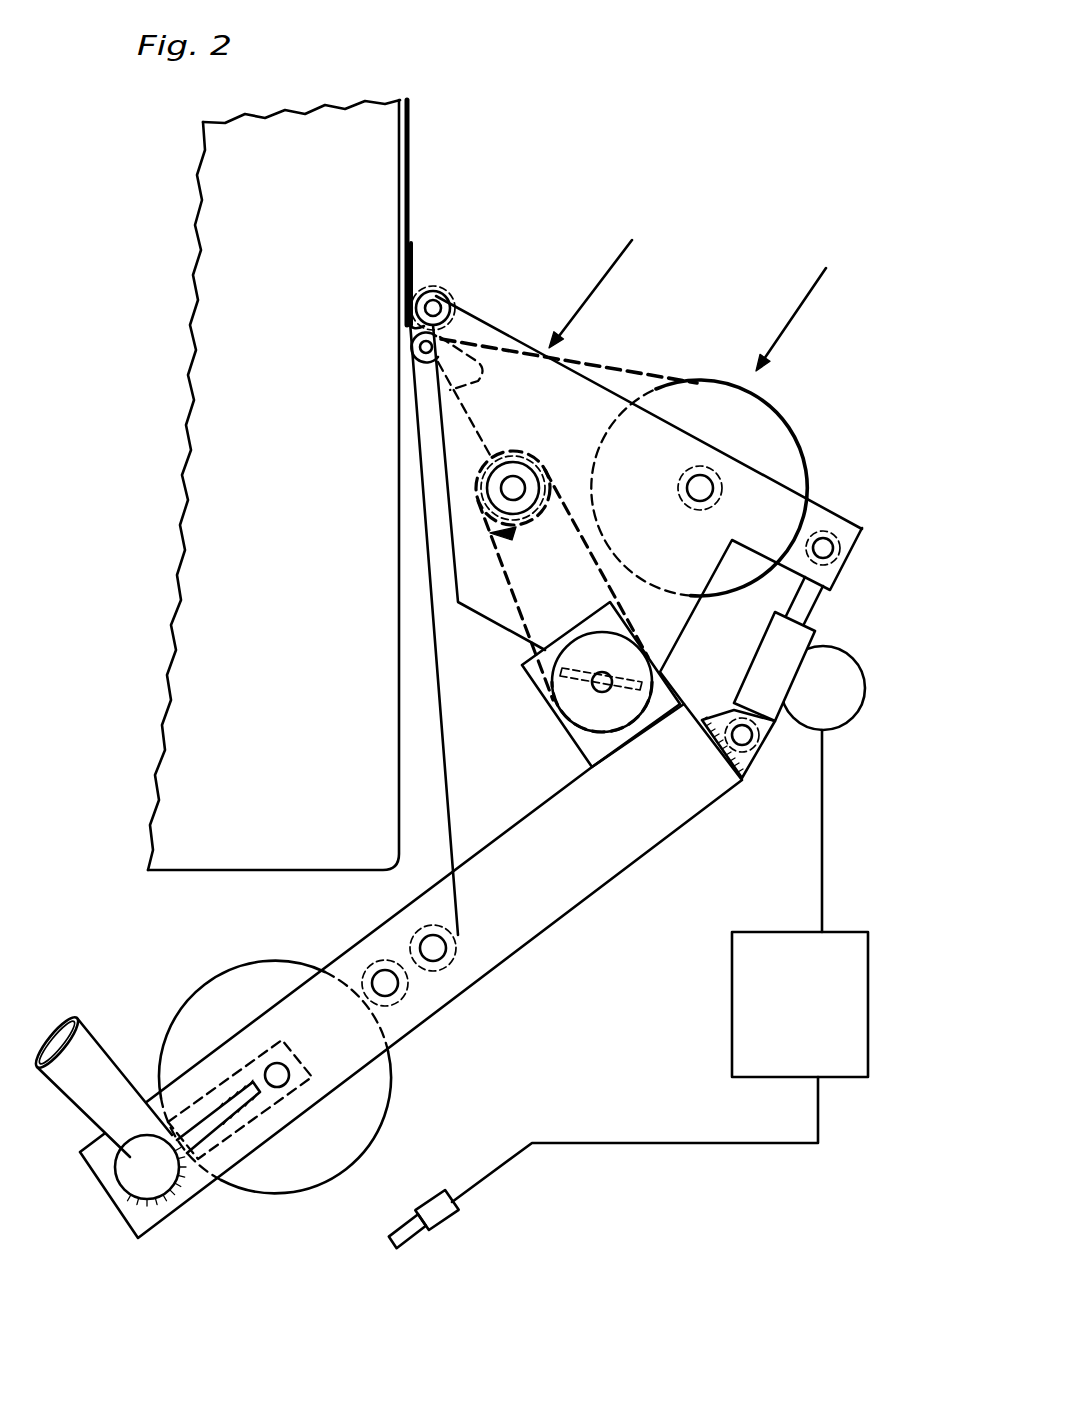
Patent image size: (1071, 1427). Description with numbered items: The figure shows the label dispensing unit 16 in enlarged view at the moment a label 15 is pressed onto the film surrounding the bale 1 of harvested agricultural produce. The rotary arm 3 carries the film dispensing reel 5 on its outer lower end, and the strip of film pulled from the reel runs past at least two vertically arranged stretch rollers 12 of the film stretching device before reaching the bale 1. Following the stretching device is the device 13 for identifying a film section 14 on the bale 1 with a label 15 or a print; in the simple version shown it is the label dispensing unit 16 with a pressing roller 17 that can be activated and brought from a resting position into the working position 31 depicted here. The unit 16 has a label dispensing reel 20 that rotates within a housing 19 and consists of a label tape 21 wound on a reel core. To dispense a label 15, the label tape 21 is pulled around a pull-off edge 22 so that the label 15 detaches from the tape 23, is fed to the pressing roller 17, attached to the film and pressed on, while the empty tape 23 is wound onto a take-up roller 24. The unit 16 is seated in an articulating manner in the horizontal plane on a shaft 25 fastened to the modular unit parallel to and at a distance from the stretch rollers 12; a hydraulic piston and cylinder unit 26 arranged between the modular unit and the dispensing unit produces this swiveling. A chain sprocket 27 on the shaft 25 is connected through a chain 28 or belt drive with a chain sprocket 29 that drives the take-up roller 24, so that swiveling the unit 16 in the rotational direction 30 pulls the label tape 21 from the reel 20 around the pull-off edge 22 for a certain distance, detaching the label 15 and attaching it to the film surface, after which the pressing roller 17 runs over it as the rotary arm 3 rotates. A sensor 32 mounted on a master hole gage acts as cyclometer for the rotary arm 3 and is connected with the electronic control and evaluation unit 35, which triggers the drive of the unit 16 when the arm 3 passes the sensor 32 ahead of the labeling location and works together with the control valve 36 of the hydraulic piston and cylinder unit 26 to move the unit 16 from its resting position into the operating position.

The bale of harvested agricultural produce 1 is at (262, 447).
The rotary arm 3 is at (88, 1055).
The film dispensing reel 5 is at (220, 1017).
The stretch rollers 12 is at (452, 962).
The device for identifying a film section 13 is at (804, 302).
The film section 14 is at (410, 143).
The label 15 is at (413, 262).
The label dispensing unit 16 is at (824, 508).
The pressing roller 17 is at (437, 290).
The housing 19 is at (836, 530).
The label dispensing reel 20 is at (750, 428).
The label tape 21 is at (592, 372).
The pull-off edge 22 is at (418, 352).
The tape 23 is at (478, 418).
The take-up roller 24 is at (491, 535).
The shaft 25 is at (600, 683).
The hydraulic piston and cylinder unit 26 is at (784, 642).
The chain sprocket 27 is at (598, 718).
The chain 28 is at (583, 532).
The chain sprocket 29 is at (484, 462).
The rotational direction 30 is at (541, 527).
The working position 31 is at (604, 275).
The sensor 32 is at (437, 1213).
The electronic control and evaluation unit 35 is at (765, 1003).
The control valve 36 is at (836, 698).